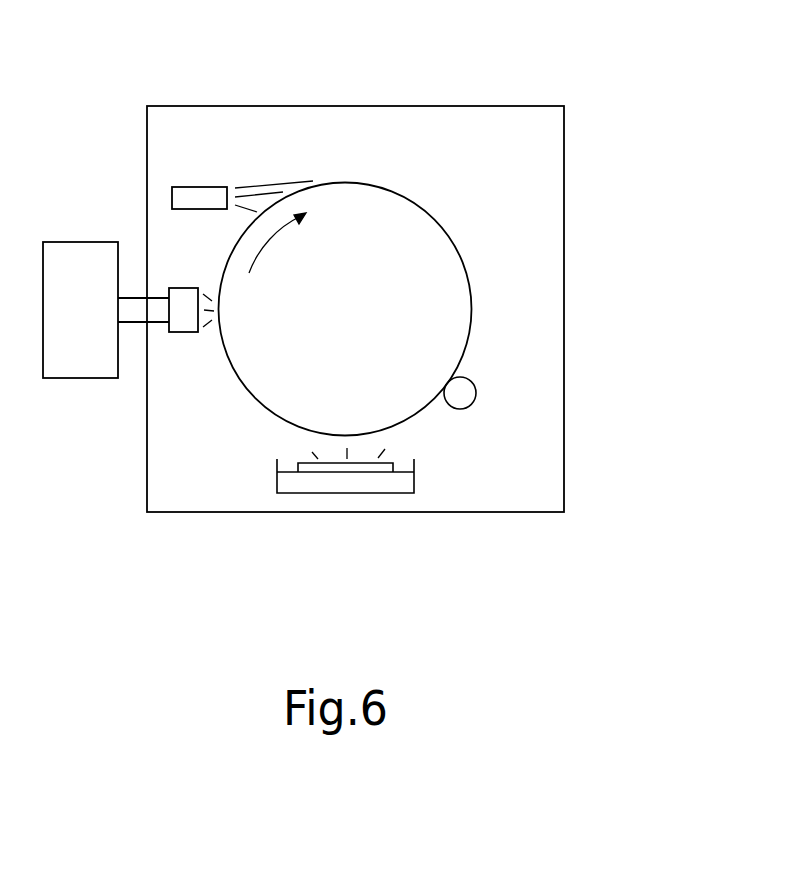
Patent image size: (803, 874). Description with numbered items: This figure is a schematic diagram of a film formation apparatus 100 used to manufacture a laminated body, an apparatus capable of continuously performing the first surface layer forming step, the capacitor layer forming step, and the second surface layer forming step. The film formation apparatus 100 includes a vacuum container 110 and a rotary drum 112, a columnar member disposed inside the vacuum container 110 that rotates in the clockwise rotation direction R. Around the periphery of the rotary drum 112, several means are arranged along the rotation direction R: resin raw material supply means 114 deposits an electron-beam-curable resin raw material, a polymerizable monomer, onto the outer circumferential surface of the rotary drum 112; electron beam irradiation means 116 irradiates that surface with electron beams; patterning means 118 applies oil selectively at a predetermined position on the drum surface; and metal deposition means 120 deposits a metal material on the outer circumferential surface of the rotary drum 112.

The film formation apparatus 100 is at (494, 70).
The vacuum container 110 is at (565, 155).
The rotary drum 112 is at (430, 238).
The resin raw material supply means 114 is at (85, 257).
The electron beam irradiation means 116 is at (217, 197).
The patterning means 118 is at (465, 394).
The metal deposition means 120 is at (414, 484).
The rotation direction R is at (277, 243).